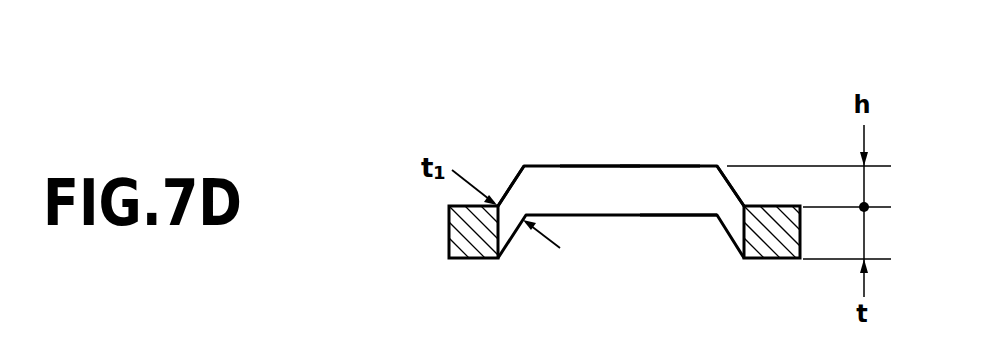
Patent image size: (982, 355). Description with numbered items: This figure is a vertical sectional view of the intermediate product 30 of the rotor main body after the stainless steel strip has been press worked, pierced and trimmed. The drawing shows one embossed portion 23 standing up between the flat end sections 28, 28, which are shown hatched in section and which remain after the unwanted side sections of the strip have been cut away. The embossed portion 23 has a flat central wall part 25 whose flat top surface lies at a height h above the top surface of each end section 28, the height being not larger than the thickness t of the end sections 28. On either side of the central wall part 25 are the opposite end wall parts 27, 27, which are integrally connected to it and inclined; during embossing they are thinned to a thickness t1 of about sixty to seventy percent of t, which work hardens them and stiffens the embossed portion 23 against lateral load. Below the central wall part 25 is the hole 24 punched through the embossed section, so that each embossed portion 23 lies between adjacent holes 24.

The intermediate product 30 is at (551, 161).
The flat central wall part 25 is at (590, 176).
The embossed portion 23 is at (647, 167).
The end wall part 27 is at (517, 185).
The hole 24 is at (745, 222).
The end section 28 is at (469, 238).